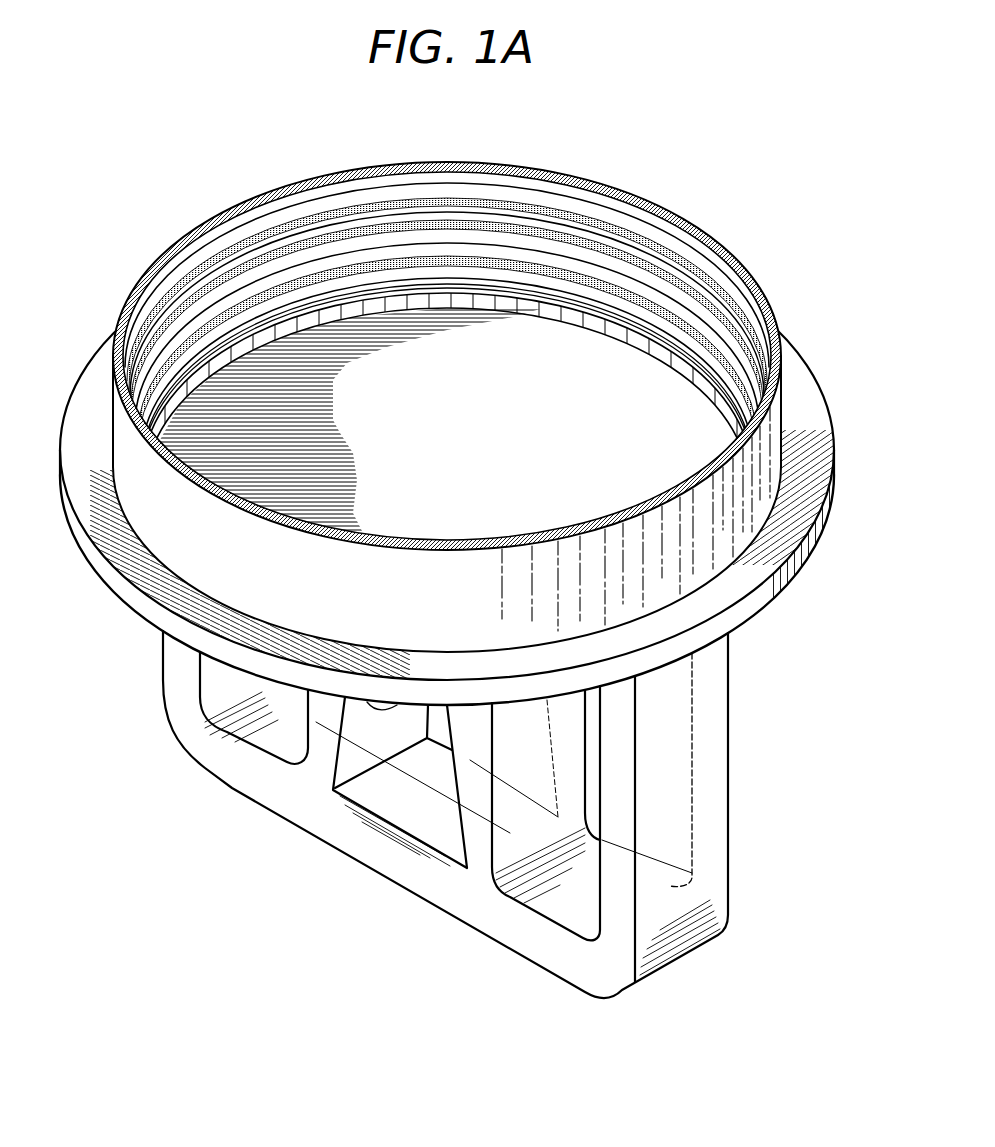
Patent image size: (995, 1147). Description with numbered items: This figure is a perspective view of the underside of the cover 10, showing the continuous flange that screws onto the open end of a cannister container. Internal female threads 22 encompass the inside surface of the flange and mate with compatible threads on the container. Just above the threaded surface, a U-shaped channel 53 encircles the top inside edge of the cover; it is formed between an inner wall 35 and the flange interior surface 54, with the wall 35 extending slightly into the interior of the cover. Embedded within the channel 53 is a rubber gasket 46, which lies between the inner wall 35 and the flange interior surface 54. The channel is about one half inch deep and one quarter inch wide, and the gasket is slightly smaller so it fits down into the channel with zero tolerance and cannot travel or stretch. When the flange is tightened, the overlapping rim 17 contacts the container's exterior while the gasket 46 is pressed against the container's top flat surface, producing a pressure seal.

The cover 10 is at (450, 536).
The overlapping rim 17 is at (120, 355).
The internal female threads 22 is at (370, 260).
The inner wall 35 is at (543, 307).
The rubber gasket 46 is at (245, 327).
The U-shaped channel 53 is at (632, 312).
The flange interior surface 54 is at (513, 273).